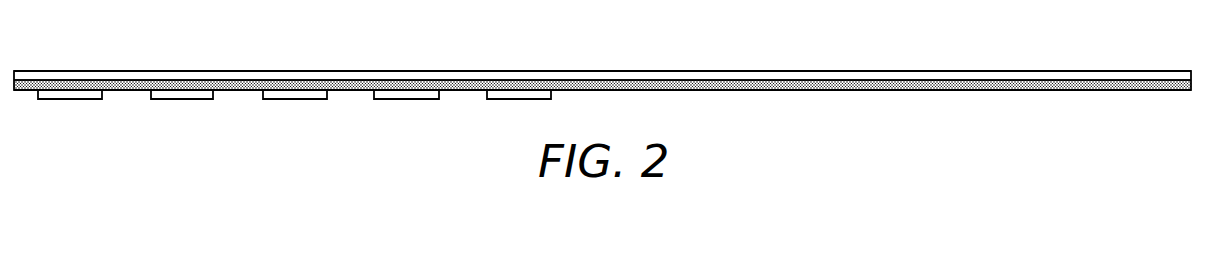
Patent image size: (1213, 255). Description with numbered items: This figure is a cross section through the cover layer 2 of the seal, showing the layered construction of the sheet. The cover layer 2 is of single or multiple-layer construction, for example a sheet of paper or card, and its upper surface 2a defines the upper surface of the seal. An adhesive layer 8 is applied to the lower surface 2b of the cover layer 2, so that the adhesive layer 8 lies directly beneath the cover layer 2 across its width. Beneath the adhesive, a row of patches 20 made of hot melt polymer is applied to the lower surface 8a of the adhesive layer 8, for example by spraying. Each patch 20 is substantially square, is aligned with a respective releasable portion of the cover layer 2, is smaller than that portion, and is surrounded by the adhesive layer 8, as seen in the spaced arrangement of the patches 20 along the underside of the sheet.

The cover layer 2 is at (1149, 59).
The upper surface of the cover layer 2a is at (1013, 71).
The lower surface of the cover layer 2b is at (947, 81).
The adhesive layer 8 is at (1078, 90).
The lower surface of the adhesive layer 8a is at (803, 90).
The patches 20 is at (71, 99).